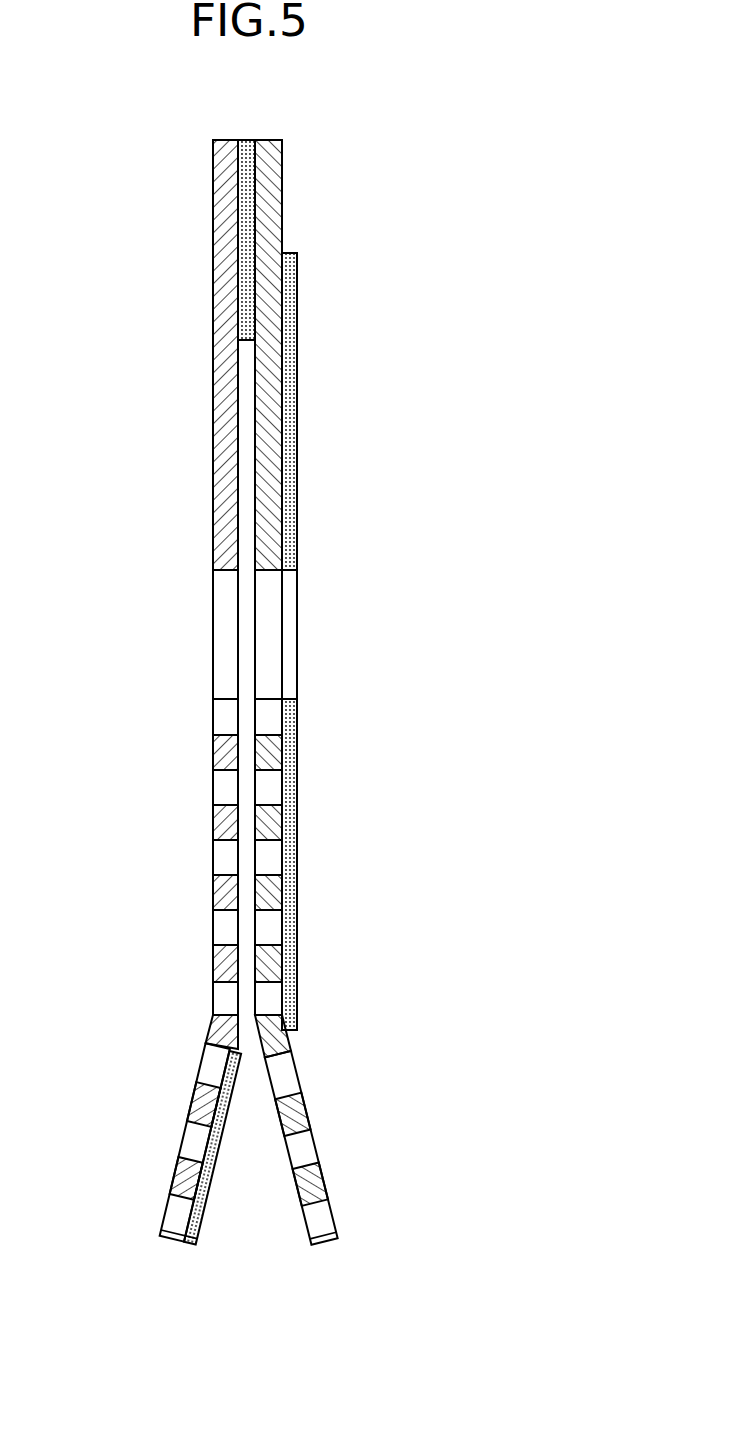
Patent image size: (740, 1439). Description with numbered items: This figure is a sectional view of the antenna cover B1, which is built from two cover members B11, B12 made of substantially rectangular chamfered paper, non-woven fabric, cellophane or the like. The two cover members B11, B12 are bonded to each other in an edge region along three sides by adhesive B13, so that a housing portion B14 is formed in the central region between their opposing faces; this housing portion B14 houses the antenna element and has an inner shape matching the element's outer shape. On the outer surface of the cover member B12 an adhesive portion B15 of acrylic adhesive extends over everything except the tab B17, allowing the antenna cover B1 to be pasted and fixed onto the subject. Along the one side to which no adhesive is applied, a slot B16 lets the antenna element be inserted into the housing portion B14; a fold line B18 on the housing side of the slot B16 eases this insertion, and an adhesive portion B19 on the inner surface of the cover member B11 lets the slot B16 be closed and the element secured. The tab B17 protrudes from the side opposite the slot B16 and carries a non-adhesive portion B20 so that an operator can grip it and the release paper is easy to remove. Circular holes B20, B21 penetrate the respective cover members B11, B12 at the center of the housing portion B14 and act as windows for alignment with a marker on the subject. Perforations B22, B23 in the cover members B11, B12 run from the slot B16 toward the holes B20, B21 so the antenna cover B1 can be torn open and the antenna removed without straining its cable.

The antenna cover B1 is at (320, 215).
The cover member B11 is at (213, 350).
The cover member B12 is at (282, 375).
The adhesive B13 is at (247, 139).
The housing portion B14 is at (246, 465).
The adhesive portion B15 is at (297, 463).
The slot B16 is at (265, 1230).
The tab B17 is at (202, 142).
The fold line B18 is at (213, 1045).
The adhesive portion B19 is at (205, 1220).
The non-adhesive portion / circular hole B20 is at (282, 167).
The circular hole B21 is at (268, 582).
The perforation B22 is at (227, 925).
The perforation B23 is at (270, 925).